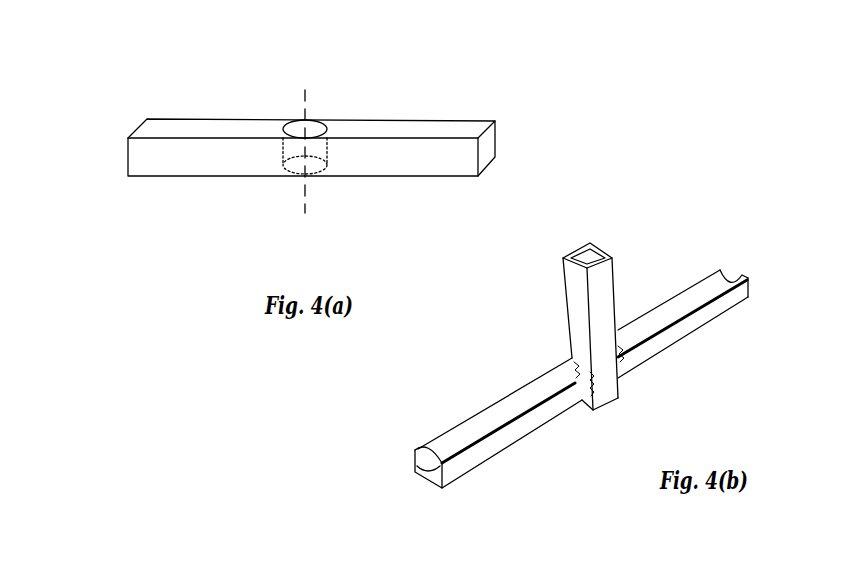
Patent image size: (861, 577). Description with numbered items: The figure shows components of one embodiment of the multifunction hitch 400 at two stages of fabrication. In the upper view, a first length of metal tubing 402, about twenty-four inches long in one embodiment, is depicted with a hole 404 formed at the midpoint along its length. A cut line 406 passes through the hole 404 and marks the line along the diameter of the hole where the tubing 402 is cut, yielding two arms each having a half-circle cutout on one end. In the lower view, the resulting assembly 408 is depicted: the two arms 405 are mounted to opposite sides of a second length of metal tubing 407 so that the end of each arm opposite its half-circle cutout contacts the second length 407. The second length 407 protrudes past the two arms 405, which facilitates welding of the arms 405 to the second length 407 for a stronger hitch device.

In FIG. 4A, the bar and tube assembly 400 is at (124, 51).
In FIG. 4A, the length of tubing 402 is at (398, 125).
In FIG. 4A, the hole 404 is at (297, 125).
In FIG. 4A, the cut line 406 is at (303, 210).
In FIG. 4B, the arms 405 is at (718, 308).
In FIG. 4B, the second length of metal tubing 407 is at (608, 292).
In FIG. 4B, the assembly 408 is at (657, 348).